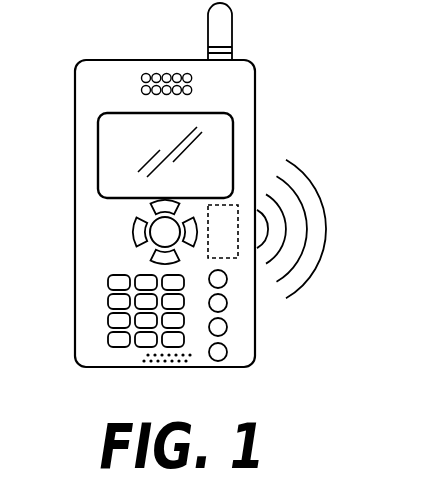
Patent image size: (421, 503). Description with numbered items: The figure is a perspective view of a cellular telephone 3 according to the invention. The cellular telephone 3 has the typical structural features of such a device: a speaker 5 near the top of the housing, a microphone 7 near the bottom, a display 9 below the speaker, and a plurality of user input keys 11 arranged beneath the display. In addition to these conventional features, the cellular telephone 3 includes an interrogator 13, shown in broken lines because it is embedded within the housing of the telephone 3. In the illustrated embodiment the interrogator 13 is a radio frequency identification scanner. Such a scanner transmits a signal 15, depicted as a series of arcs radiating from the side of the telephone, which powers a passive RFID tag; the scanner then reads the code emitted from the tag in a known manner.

The cellular telephone 3 is at (267, 71).
The speaker 5 is at (147, 75).
The microphone 7 is at (185, 364).
The display 9 is at (115, 145).
The user input keys 11 is at (138, 237).
The interrogator 13 is at (228, 258).
The signal 15 is at (318, 190).